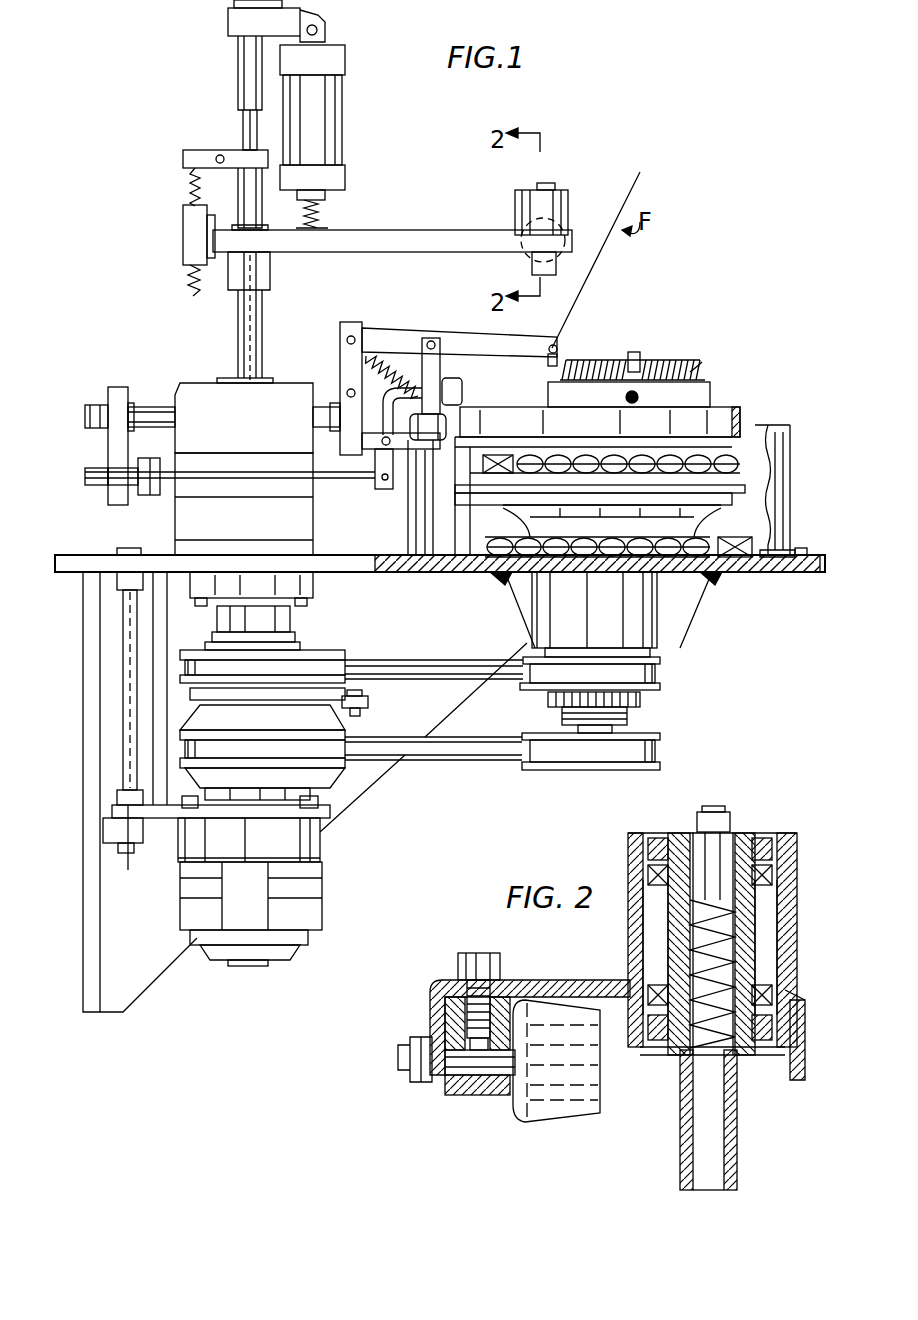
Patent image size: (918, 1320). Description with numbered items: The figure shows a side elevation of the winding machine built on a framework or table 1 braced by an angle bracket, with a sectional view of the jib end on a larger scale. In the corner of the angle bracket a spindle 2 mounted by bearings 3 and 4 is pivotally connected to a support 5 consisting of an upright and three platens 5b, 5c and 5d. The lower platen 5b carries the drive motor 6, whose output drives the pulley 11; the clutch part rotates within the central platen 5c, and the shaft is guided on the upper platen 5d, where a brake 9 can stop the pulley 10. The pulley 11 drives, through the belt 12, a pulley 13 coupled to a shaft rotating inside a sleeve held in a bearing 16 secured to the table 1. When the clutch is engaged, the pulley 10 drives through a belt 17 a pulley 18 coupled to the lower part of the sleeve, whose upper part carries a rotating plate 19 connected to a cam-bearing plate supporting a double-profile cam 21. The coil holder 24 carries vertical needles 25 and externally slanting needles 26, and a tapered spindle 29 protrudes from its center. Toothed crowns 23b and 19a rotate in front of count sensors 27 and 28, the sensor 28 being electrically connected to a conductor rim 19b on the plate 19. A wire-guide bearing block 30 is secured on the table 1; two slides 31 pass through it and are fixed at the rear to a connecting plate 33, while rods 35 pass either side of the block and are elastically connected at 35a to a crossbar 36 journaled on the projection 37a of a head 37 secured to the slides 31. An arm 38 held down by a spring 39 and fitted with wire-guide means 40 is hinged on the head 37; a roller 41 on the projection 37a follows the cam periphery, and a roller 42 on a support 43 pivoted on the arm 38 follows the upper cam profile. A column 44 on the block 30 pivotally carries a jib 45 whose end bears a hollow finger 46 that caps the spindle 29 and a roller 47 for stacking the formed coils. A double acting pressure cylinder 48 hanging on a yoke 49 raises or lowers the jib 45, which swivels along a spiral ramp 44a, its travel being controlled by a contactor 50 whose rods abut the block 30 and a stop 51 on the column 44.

In FIG. 1, the table 1 is at (80, 556).
In FIG. 1, the spindle 2 is at (124, 727).
In FIG. 1, the bearing 3 is at (118, 578).
In FIG. 1, the bearing 4 is at (103, 830).
In FIG. 1, the support 5 is at (180, 816).
In FIG. 1, the lower platen 5b is at (340, 810).
In FIG. 1, the central platen 5c is at (368, 705).
In FIG. 1, the upper platen 5d is at (320, 580).
In FIG. 1, the drive motor 6 is at (316, 868).
In FIG. 1, the brake 9 is at (285, 645).
In FIG. 1, the pulley 10 is at (320, 655).
In FIG. 1, the pulley 11 is at (318, 758).
In FIG. 1, the belt 12 is at (437, 746).
In FIG. 1, the pulley 13 is at (533, 770).
In FIG. 1, the bearing 16 is at (640, 628).
In FIG. 1, the belt 17 is at (396, 672).
In FIG. 1, the pulley 18 is at (660, 688).
In FIG. 1, the rotating plate 19 is at (664, 526).
In FIG. 1, the toothed crown 19a is at (490, 540).
In FIG. 1, the conductor rim 19b is at (740, 490).
In FIG. 1, the cam 21 is at (740, 422).
In FIG. 1, the toothed crown 23b is at (740, 464).
In FIG. 1, the coil holder 24 is at (712, 393).
In FIG. 1, the needles 25 is at (673, 362).
In FIG. 1, the needles 26 is at (694, 372).
In FIG. 1, the count sensor 27 is at (738, 534).
In FIG. 1, the count sensor 28 is at (505, 462).
In FIG. 1, the tapered spindle 29 is at (634, 352).
In FIG. 1, the bearing block 30 is at (203, 400).
In FIG. 1, the slides 31 is at (155, 405).
In FIG. 1, the connecting plate 33 is at (115, 452).
In FIG. 1, the rods 35 is at (260, 480).
In FIG. 1, the elastic connection 35a is at (145, 488).
In FIG. 1, the crossbar 36 is at (385, 486).
In FIG. 1, the head 37 is at (350, 322).
In FIG. 1, the projection 37a is at (410, 456).
In FIG. 1, the arm 38 is at (410, 340).
In FIG. 1, the spring 39 is at (370, 361).
In FIG. 1, the wire-guide means 40 is at (557, 349).
In FIG. 1, the roller 41 is at (440, 426).
In FIG. 1, the roller 42 is at (454, 390).
In FIG. 1, the support 43 is at (438, 352).
In FIG. 1, the column 44 is at (236, 362).
In FIG. 1, the spiral ramp 44a is at (258, 316).
In FIG. 1, the jib 45 is at (393, 246).
In FIG. 2, the jib 45 is at (560, 986).
In FIG. 1, the hollow finger 46 is at (548, 266).
In FIG. 2, the hollow finger 46 is at (718, 1130).
In FIG. 1, the roller 47 is at (525, 262).
In FIG. 2, the roller 47 is at (572, 1112).
In FIG. 1, the double acting pressure cylinder 48 is at (325, 116).
In FIG. 1, the yoke 49 is at (245, 18).
In FIG. 1, the contactor 50 is at (193, 238).
In FIG. 1, the stop 51 is at (183, 157).